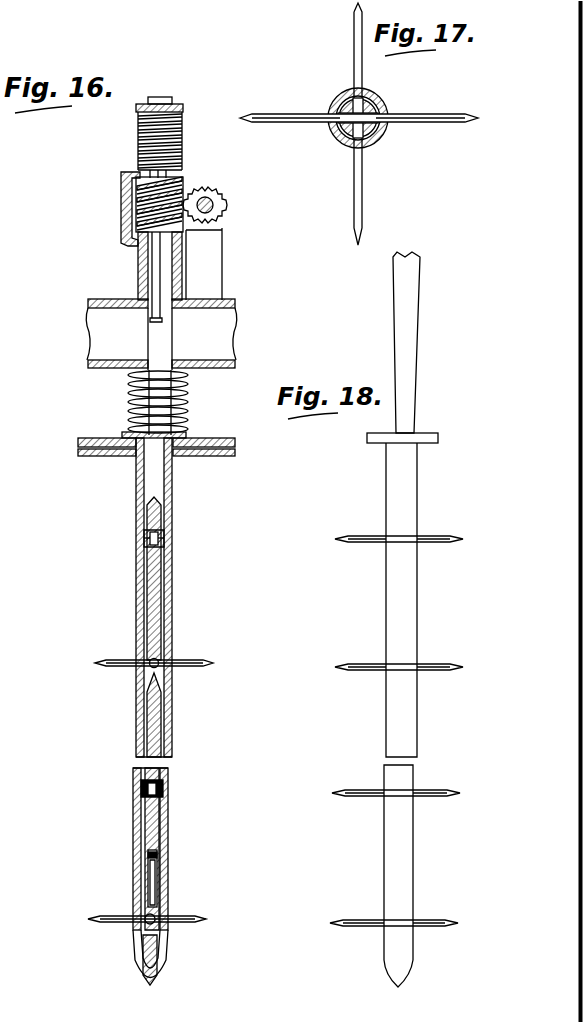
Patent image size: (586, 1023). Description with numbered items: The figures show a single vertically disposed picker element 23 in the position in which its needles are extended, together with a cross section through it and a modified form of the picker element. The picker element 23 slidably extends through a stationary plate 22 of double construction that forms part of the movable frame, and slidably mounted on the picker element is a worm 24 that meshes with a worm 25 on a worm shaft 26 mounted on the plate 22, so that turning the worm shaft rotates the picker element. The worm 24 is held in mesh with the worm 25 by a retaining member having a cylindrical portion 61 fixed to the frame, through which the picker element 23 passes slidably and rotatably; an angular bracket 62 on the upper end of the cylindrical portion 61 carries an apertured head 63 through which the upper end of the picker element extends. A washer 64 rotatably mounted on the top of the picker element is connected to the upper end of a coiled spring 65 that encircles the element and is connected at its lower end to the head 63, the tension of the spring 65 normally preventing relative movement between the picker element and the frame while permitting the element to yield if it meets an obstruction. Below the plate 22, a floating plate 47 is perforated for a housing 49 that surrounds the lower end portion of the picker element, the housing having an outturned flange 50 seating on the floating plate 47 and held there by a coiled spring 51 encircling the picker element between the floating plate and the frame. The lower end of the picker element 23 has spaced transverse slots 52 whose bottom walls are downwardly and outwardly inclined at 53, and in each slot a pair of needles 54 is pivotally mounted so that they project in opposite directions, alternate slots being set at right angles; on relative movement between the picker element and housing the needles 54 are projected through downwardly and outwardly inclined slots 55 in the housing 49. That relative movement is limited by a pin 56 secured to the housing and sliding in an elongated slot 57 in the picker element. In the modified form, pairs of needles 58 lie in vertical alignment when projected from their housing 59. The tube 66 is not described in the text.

In FIG. 16, the stationary plate 22 is at (212, 324).
In FIG. 16, the picker element 23 is at (165, 732).
In FIG. 17, the picker element 23 is at (381, 141).
In FIG. 16, the worm 24 is at (138, 196).
In FIG. 16, the worm 25 is at (218, 196).
In FIG. 16, the worm shaft 26 is at (214, 207).
In FIG. 16, the floating plate 47 is at (214, 440).
In FIG. 17, the housing 49 is at (375, 101).
In FIG. 16, the outturned flange 50 is at (186, 432).
In FIG. 16, the coiled spring 51 is at (188, 388).
In FIG. 16, the slot 52 is at (162, 530).
In FIG. 17, the slot 52 is at (385, 108).
In FIG. 16, the inclined bottom wall 53 is at (138, 692).
In FIG. 16, the needle 54 is at (146, 536).
In FIG. 17, the needle 54 is at (313, 124).
In FIG. 17, the inclined slot 55 is at (391, 118).
In FIG. 16, the pin 56 is at (148, 857).
In FIG. 16, the elongated slot 57 is at (150, 887).
In FIG. 18, the needle 58 is at (348, 542).
In FIG. 18, the housing 59 is at (392, 627).
In FIG. 16, the cylindrical portion 61 is at (138, 256).
In FIG. 16, the angular bracket 62 is at (121, 180).
In FIG. 16, the apertured head 63 is at (181, 176).
In FIG. 16, the washer 64 is at (181, 107).
In FIG. 16, the coiled spring 65 is at (140, 131).
In FIG. 16, the outer tube 66 is at (194, 708).